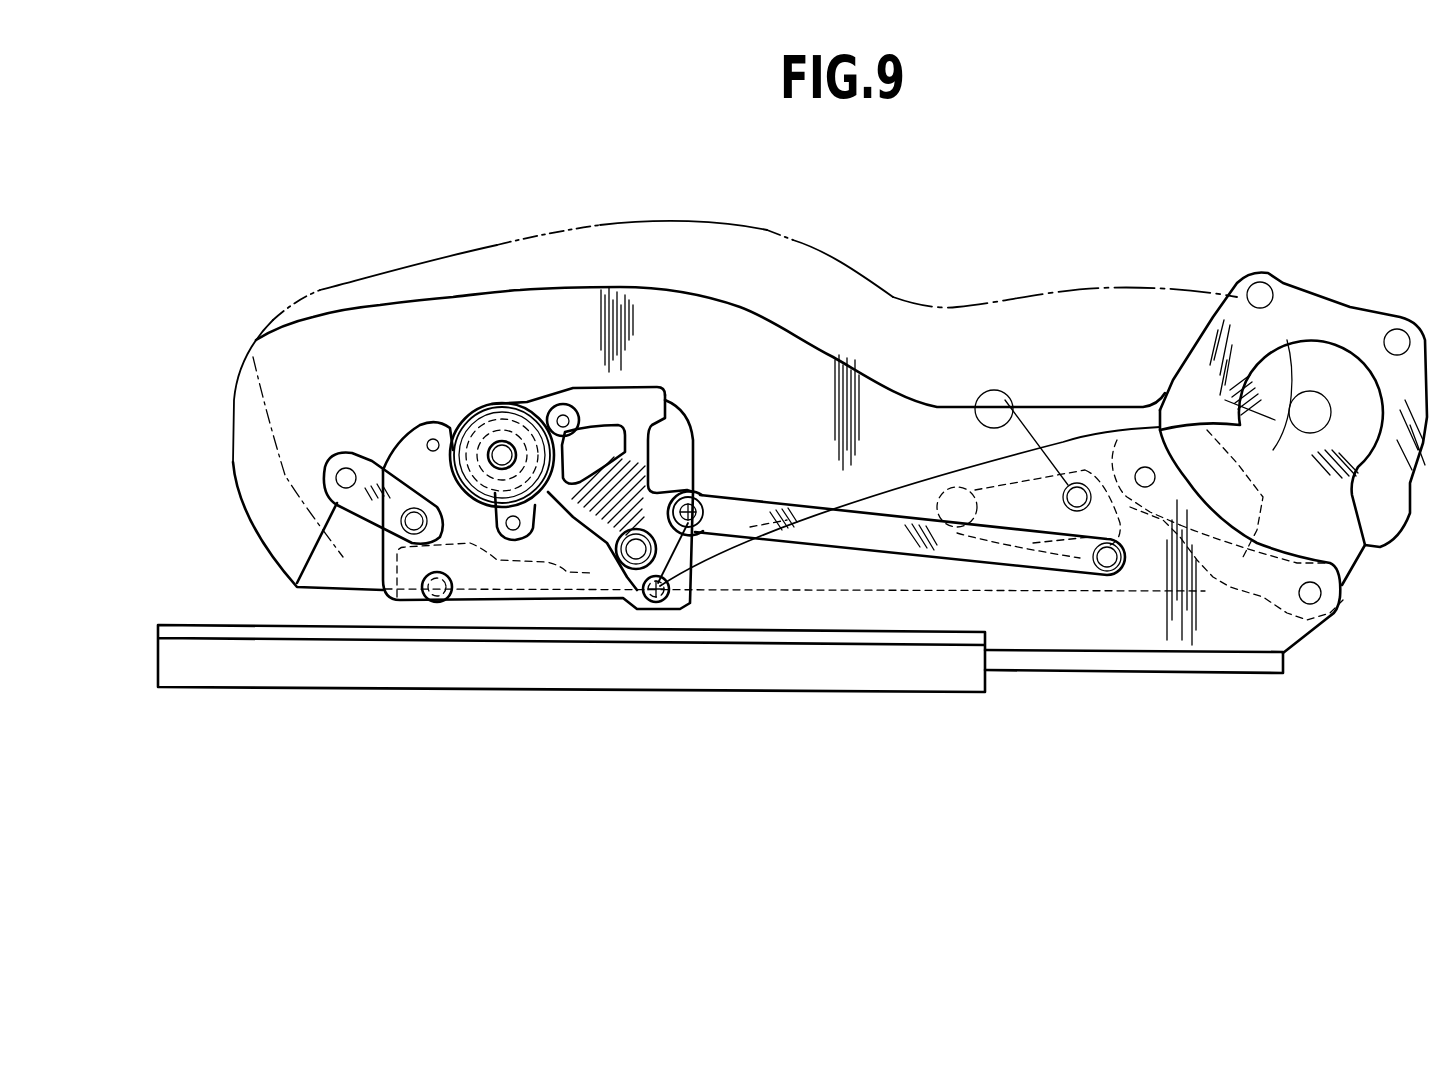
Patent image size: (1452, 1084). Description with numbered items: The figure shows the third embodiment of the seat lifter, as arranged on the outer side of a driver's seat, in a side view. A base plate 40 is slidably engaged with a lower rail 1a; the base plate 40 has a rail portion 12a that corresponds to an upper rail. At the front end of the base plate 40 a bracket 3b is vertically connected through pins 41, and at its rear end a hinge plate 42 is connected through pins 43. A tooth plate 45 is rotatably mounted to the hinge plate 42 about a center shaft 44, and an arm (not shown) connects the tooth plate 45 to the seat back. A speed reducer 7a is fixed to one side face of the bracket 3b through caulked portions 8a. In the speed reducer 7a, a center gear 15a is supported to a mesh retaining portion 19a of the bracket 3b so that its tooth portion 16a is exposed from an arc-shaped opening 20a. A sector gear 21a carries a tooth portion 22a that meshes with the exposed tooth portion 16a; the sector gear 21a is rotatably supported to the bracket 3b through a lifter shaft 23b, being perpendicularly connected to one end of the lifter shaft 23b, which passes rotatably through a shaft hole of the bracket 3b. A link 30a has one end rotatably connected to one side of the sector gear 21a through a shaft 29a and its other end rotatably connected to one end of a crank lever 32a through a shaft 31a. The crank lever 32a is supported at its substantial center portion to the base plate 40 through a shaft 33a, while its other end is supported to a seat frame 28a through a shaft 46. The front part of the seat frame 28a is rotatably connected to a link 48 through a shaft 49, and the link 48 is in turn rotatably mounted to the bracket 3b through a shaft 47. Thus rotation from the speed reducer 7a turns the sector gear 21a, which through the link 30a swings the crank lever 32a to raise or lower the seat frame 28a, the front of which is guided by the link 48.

The lower rail 1a is at (617, 680).
The rail portion 12a is at (1142, 665).
The bracket 3b is at (683, 440).
The speed reducer 7a is at (502, 392).
The caulked portions 8a is at (432, 440).
The center gear 15a is at (514, 430).
The tooth portion 16a is at (489, 433).
The mesh retaining portion 19a is at (508, 528).
The arc-shaped opening 20a is at (520, 492).
The sector gear 21a is at (648, 563).
The tooth portion 22a is at (657, 387).
The lifter shaft 23b is at (653, 605).
The seat frame 28a is at (868, 280).
The shaft 29a is at (713, 512).
The link 30a is at (891, 537).
The shaft 31a is at (1095, 562).
The crank lever 32a is at (1037, 488).
The shaft 33a is at (1093, 470).
The base plate 40 is at (1217, 637).
The pins 41 is at (435, 600).
The hinge plate 42 is at (1353, 530).
The pins 43 is at (1145, 468).
The center shaft 44 is at (1317, 407).
The tooth plate 45 is at (1308, 300).
The shaft 46 is at (953, 487).
The shaft 47 is at (401, 521).
The link 48 is at (348, 469).
The shaft 49 is at (337, 500).